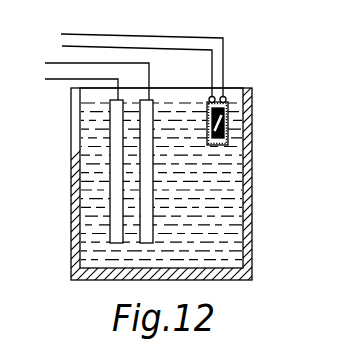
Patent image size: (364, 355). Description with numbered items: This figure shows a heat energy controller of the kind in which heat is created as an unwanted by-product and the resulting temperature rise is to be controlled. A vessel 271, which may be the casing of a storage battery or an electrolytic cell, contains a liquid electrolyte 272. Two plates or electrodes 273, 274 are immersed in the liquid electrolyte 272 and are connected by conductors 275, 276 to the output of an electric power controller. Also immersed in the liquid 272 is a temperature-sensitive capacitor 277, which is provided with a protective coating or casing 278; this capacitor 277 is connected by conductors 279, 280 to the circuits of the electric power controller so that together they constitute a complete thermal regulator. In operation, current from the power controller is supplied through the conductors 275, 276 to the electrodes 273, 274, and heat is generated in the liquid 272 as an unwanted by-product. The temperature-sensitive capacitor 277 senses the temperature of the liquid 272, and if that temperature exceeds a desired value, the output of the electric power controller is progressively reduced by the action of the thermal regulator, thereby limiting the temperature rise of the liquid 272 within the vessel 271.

The vessel 271 is at (71, 209).
The liquid electrolyte 272 is at (230, 198).
The electrode 273 is at (114, 150).
The electrode 274 is at (147, 163).
The conductor 275 is at (45, 79).
The conductor 276 is at (45, 63).
The temperature-sensitive capacitor 277 is at (224, 123).
The protective coating or casing 278 is at (229, 141).
The conductor 279 is at (61, 34).
The conductor 280 is at (62, 46).